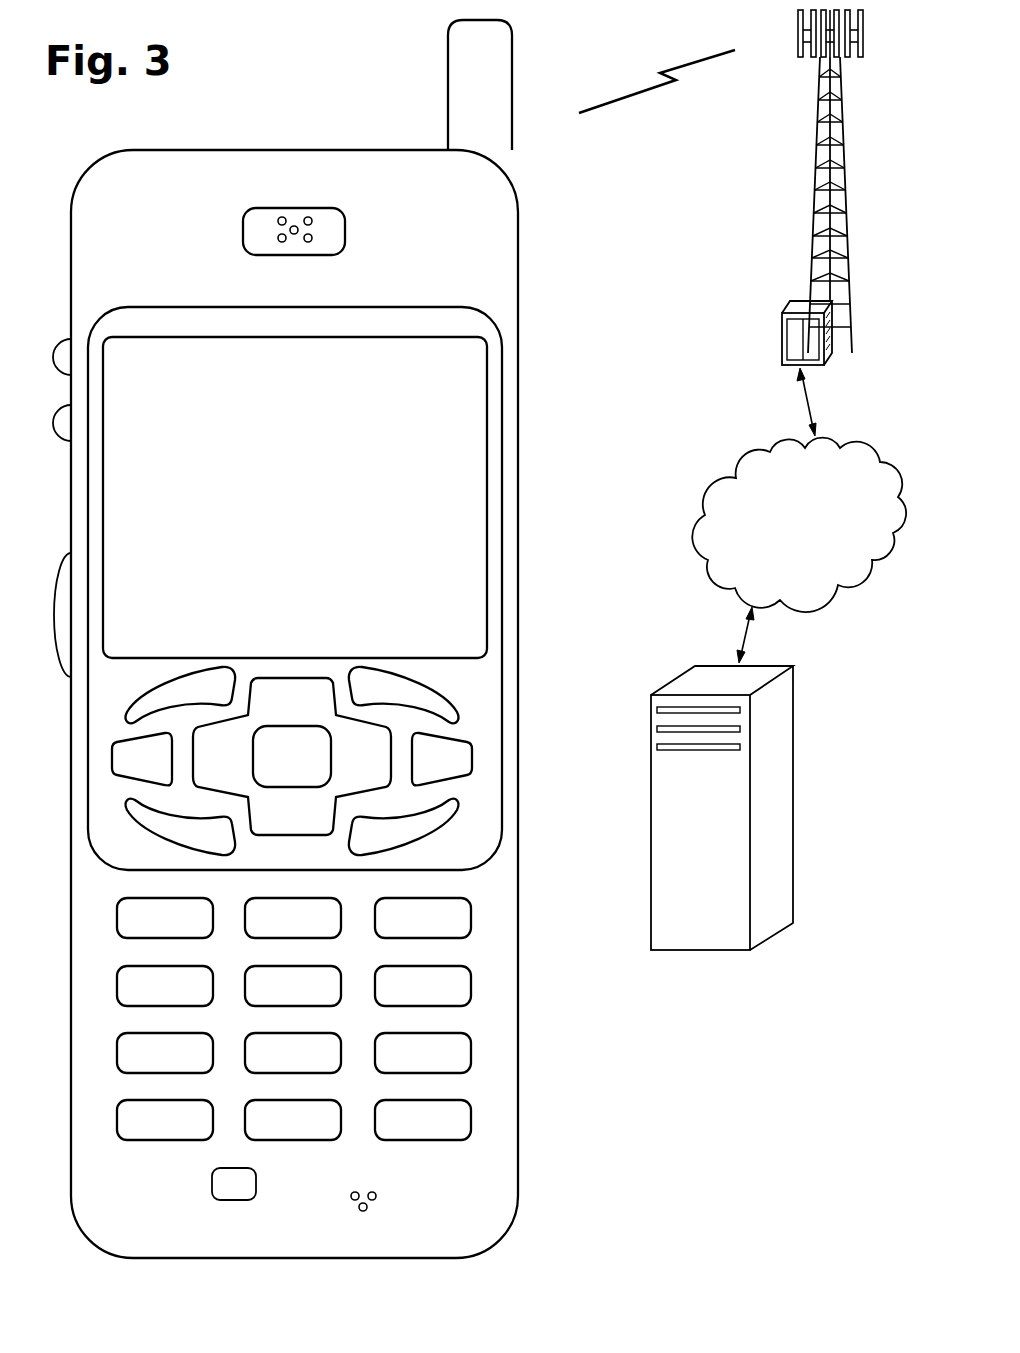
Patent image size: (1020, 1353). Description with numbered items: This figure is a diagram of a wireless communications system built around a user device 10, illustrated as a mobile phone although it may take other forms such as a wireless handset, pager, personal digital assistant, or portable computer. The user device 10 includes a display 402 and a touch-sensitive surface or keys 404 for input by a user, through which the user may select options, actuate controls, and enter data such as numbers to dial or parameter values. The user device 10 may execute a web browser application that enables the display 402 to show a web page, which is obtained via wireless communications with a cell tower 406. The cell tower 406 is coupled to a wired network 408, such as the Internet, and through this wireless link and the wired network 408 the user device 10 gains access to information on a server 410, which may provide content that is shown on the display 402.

The user device 10 is at (125, 1258).
The display 402 is at (488, 351).
The keys 404 is at (525, 1063).
The cell tower 406 is at (812, 203).
The wired network 408 is at (722, 578).
The server 410 is at (702, 950).